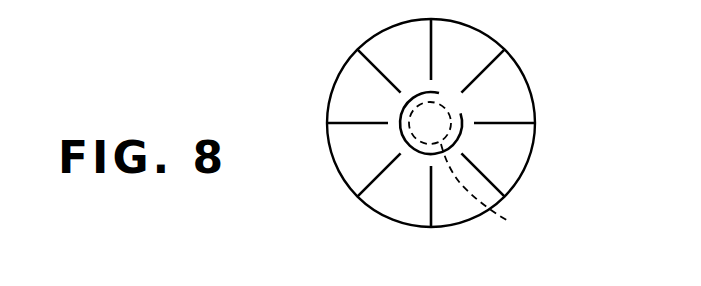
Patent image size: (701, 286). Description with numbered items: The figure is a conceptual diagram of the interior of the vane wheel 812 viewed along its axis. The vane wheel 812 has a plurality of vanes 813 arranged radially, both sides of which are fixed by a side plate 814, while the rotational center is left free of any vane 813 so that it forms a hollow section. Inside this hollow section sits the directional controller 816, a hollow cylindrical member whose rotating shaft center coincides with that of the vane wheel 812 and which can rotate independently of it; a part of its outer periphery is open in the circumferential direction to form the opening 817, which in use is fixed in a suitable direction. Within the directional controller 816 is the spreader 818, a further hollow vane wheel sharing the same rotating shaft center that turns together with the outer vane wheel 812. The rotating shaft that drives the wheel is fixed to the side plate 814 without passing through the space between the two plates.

The vane wheel 812 is at (334, 184).
The vane 813 is at (373, 70).
The side plate 814 is at (485, 50).
The directional controller 816 is at (458, 140).
The opening 817 is at (452, 103).
The spreader 818 is at (503, 193).